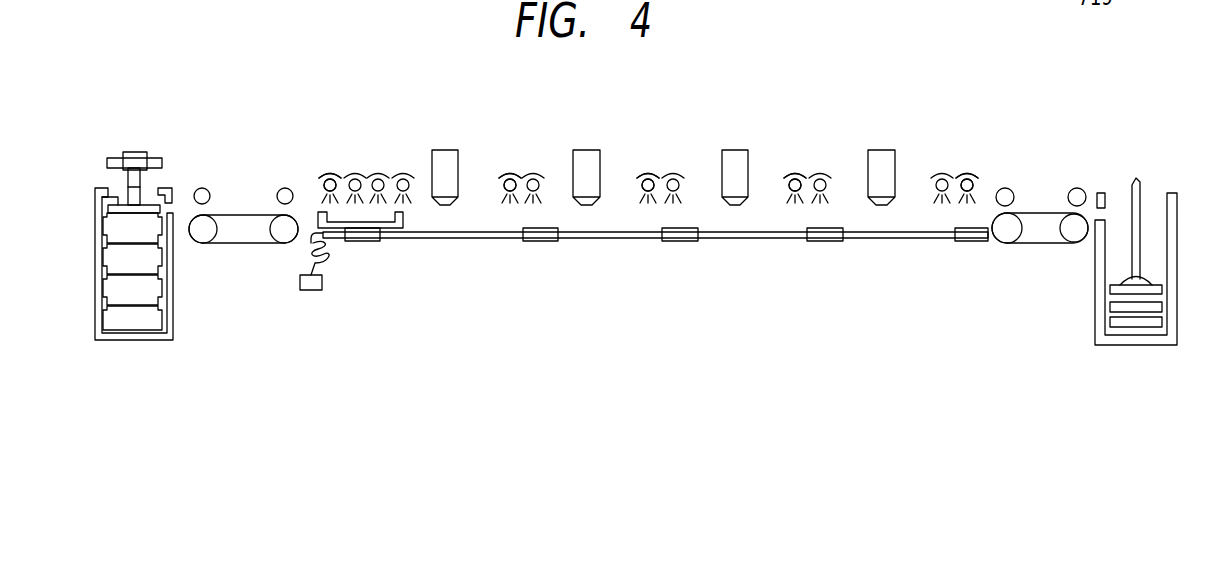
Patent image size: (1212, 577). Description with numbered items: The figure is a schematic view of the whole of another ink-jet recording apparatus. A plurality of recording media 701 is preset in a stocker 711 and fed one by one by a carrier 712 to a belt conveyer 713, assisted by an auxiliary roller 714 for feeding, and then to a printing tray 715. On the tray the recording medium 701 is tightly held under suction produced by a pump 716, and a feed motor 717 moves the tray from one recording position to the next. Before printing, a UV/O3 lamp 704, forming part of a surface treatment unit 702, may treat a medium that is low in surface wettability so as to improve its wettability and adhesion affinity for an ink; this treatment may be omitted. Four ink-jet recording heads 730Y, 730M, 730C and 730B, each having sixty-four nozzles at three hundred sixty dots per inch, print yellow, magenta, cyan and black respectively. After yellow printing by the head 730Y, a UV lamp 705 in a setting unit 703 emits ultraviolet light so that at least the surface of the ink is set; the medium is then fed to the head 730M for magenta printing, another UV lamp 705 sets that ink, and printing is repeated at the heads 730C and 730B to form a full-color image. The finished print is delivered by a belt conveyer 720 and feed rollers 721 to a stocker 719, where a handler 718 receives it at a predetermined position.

The recording medium 701 is at (118, 205).
The exposure light source unit 702 is at (415, 140).
The fixing light source unit 703 is at (548, 140).
The UV/O3 lamp 704 is at (331, 172).
The UV lamp 705 is at (507, 177).
The stocker 711 is at (98, 257).
The carrier 712 is at (137, 152).
The belt conveyer 713 is at (252, 244).
The auxiliary roller 714 is at (280, 189).
The printing tray 715 is at (395, 241).
The pump 716 is at (318, 290).
The feed motor 717 is at (675, 242).
The handler 718 is at (1140, 190).
The stocker 719 is at (1150, 338).
The belt conveyer 720 is at (1050, 245).
The feed rollers 721 is at (1012, 188).
The recording head 730Y is at (448, 156).
The recording head 730M is at (584, 157).
The recording head 730C is at (729, 157).
The recording head 730B is at (876, 158).